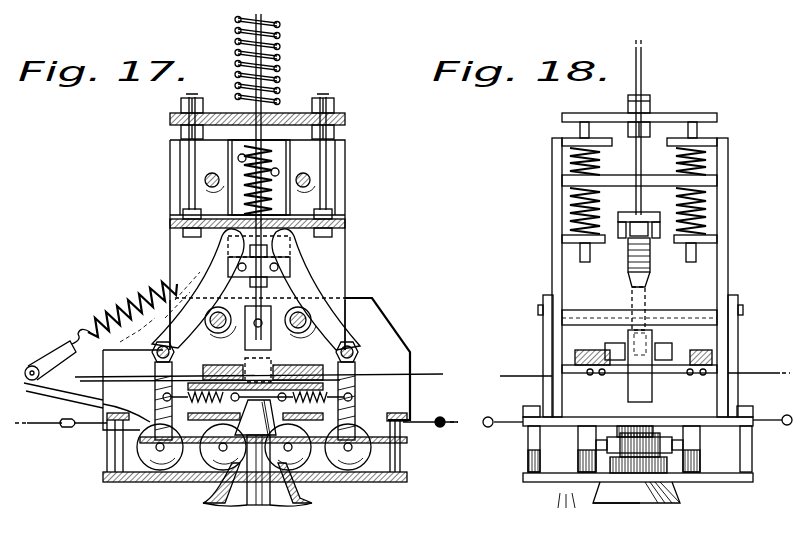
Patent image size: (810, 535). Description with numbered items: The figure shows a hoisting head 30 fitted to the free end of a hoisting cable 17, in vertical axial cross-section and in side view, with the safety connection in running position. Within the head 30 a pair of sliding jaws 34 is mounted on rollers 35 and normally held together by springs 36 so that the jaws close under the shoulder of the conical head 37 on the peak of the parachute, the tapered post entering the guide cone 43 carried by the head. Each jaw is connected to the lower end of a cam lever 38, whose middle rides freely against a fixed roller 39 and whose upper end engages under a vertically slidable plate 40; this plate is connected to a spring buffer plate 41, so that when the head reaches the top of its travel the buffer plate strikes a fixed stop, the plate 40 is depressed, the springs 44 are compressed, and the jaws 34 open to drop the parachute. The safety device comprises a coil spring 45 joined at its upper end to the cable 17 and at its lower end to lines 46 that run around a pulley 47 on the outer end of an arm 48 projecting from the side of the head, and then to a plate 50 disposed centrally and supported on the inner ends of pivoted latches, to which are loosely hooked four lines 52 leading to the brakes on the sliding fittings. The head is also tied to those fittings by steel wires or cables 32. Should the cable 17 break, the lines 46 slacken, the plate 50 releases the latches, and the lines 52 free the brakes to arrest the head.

In FIG. 17, the cable 17 is at (263, 33).
In FIG. 18, the cable 17 is at (645, 62).
In FIG. 17, the head 30 is at (340, 265).
In FIG. 18, the head 30 is at (556, 287).
In FIG. 17, the steel wires or cables 32 is at (62, 427).
In FIG. 18, the steel wires or cables 32 is at (517, 423).
In FIG. 17, the sliding jaws 34 is at (212, 455).
In FIG. 18, the sliding jaws 34 is at (612, 440).
In FIG. 17, the rollers 35 is at (172, 462).
In FIG. 18, the rollers 35 is at (587, 452).
In FIG. 17, the springs 36 is at (165, 397).
In FIG. 17, the conical head 37 is at (270, 493).
In FIG. 18, the conical head 37 is at (638, 460).
In FIG. 17, the cam lever 38 is at (214, 290).
In FIG. 18, the cam lever 38 is at (632, 265).
In FIG. 17, the fixed roller 39 is at (312, 323).
In FIG. 18, the fixed roller 39 is at (700, 315).
In FIG. 17, the vertically slidable plate 40 is at (338, 218).
In FIG. 18, the vertically slidable plate 40 is at (667, 208).
In FIG. 17, the spring buffer plate 41 is at (292, 112).
In FIG. 18, the spring buffer plate 41 is at (701, 107).
In FIG. 17, the guide cone 43 is at (243, 500).
In FIG. 18, the guide cone 43 is at (680, 497).
In FIG. 17, the springs 44 is at (248, 212).
In FIG. 18, the springs 44 is at (577, 230).
In FIG. 17, the coil spring 45 is at (82, 332).
In FIG. 17, the lines 46 is at (49, 358).
In FIG. 17, the pulley 47 is at (28, 386).
In FIG. 17, the arm 48 is at (100, 404).
In FIG. 17, the plate 50 is at (272, 372).
In FIG. 18, the plate 50 is at (590, 365).
In FIG. 17, the lines 52 is at (94, 376).
In FIG. 18, the lines 52 is at (523, 367).